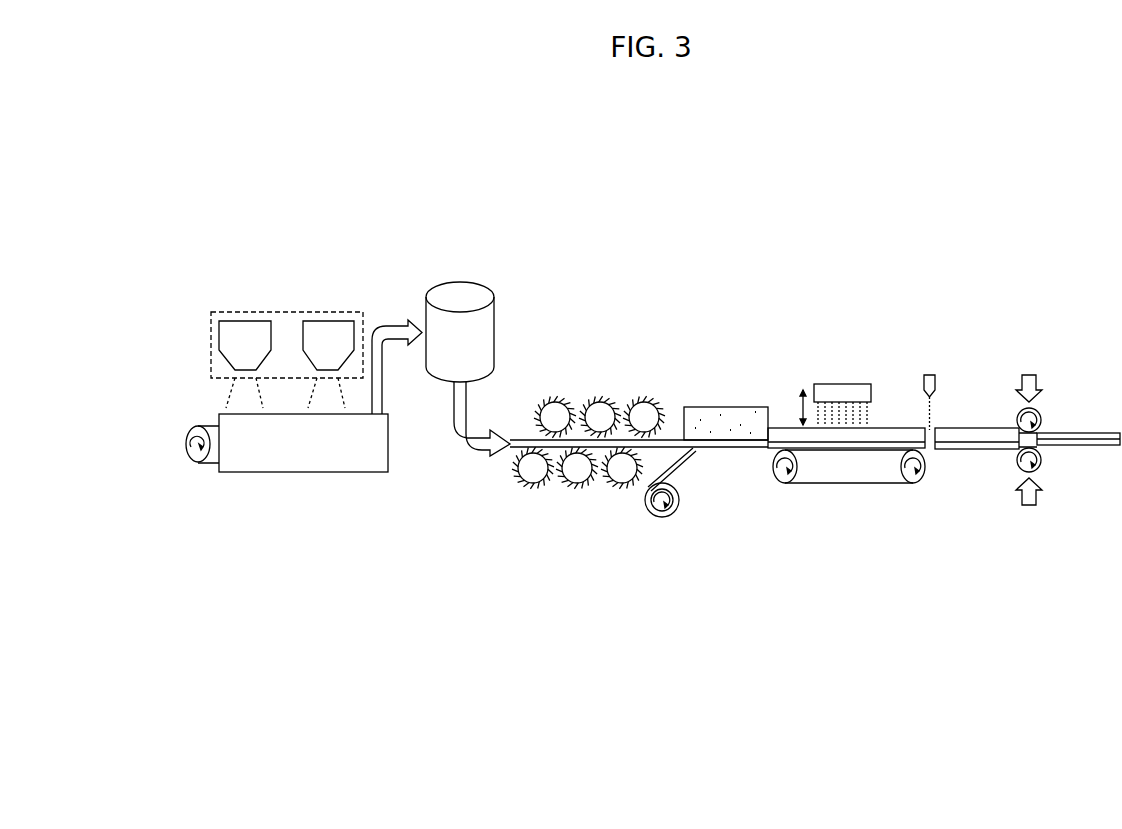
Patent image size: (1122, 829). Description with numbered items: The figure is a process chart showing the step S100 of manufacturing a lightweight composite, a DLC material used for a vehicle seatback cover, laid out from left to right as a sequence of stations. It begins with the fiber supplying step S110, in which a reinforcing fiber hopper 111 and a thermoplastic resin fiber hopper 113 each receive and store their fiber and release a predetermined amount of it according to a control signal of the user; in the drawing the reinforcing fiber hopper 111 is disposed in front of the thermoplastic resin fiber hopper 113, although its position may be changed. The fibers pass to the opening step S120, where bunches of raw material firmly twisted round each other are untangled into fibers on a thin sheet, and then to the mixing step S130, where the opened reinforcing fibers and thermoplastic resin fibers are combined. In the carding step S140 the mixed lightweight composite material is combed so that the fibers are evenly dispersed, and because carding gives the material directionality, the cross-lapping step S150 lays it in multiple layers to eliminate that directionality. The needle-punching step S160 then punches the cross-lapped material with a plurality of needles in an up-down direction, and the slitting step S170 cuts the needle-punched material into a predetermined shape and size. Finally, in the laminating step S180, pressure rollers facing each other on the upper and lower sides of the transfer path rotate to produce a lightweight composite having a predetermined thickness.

The step of manufacturing a lightweight composite S100 is at (243, 193).
The fiber supplying step S110 is at (358, 312).
The reinforcing fiber hopper 111 is at (243, 321).
The thermoplastic resin fiber hopper 113 is at (328, 321).
The opening step S120 is at (303, 472).
The mixing step S130 is at (460, 278).
The carding step S140 is at (608, 383).
The cross-lapping step S150 is at (727, 400).
The needle-punching step S160 is at (840, 382).
The slitting step S170 is at (930, 370).
The laminating step S180 is at (1050, 395).